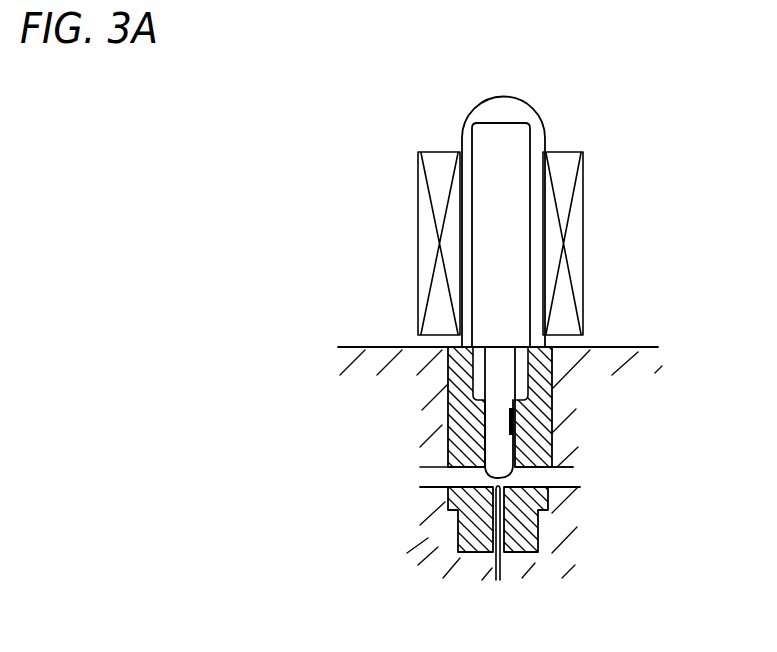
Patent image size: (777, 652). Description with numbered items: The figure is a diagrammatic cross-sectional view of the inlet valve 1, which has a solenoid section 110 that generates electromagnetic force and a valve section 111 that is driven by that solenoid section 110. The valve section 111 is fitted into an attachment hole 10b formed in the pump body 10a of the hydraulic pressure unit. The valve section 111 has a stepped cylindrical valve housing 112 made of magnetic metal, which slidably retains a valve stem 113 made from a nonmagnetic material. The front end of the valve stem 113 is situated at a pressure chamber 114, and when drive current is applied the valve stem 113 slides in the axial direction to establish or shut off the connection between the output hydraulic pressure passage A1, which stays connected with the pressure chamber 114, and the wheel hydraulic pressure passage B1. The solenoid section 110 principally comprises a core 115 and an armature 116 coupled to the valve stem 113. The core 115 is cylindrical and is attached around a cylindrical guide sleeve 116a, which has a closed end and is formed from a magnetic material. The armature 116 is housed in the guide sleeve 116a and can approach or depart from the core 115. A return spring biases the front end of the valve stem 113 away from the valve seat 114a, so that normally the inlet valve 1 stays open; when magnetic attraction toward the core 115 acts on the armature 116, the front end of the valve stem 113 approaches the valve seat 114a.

The inlet valve 1 is at (652, 138).
The pump body 10a is at (615, 347).
The attachment hole 10b is at (548, 420).
The solenoid section 110 is at (372, 268).
The valve section 111 is at (372, 393).
The valve housing 112 is at (455, 446).
The valve stem 113 is at (505, 383).
The pressure chamber 114 is at (470, 478).
The valve seat 114a is at (487, 505).
The core 115 is at (427, 236).
The armature 116 is at (503, 132).
The guide sleeve 116a is at (472, 110).
The output hydraulic pressure passage A1 is at (500, 568).
The wheel hydraulic pressure passage B1 is at (573, 476).